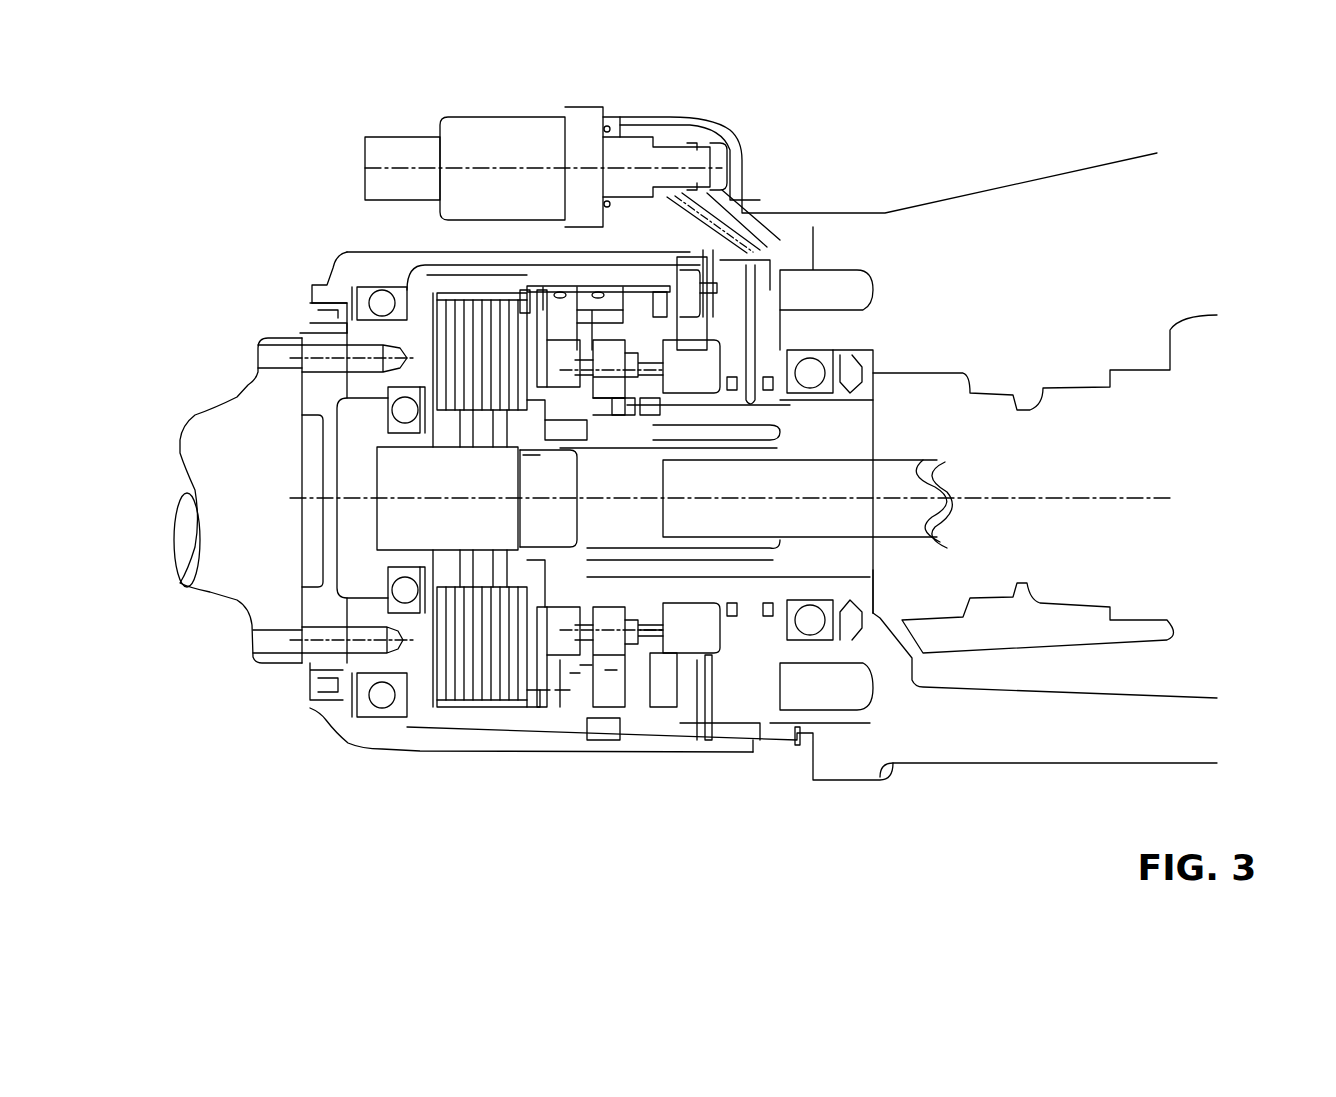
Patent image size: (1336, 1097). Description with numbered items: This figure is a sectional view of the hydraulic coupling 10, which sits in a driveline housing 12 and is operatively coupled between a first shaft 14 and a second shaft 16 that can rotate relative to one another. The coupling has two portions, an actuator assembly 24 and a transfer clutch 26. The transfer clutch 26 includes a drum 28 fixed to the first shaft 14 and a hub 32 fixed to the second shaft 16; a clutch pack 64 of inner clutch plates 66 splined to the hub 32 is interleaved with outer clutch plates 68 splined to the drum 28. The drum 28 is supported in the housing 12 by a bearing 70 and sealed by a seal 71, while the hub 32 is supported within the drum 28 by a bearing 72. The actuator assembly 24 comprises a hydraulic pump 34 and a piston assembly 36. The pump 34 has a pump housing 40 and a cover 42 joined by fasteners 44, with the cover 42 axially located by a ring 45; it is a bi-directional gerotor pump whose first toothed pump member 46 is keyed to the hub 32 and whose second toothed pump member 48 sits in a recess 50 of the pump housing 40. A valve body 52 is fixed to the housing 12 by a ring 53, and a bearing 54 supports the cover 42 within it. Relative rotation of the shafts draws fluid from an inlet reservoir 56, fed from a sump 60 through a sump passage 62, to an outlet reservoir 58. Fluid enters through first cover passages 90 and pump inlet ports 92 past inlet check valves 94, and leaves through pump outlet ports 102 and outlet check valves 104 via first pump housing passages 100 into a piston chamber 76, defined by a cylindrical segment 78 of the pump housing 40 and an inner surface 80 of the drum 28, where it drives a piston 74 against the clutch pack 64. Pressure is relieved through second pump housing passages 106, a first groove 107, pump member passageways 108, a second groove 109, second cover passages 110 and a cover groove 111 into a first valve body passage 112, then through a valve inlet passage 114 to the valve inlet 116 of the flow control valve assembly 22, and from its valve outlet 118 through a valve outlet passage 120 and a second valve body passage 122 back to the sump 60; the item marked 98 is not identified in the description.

The hydraulic coupling 10 is at (323, 793).
The housing 12 is at (355, 267).
The first shaft 14 is at (212, 567).
The second shaft 16 is at (923, 460).
The flow control valve assembly 22 is at (472, 123).
The actuator assembly 24 is at (585, 670).
The transfer clutch 26 is at (467, 710).
The drum 28 is at (313, 610).
The hub 32 is at (513, 560).
The hydraulic pump 34 is at (585, 287).
The piston assembly 36 is at (537, 287).
The pump housing 40 is at (605, 725).
The cover 42 is at (643, 697).
The fasteners 44 is at (613, 313).
The ring 45 is at (650, 707).
The first toothed pump member 46 is at (620, 550).
The second toothed pump member 48 is at (596, 660).
The recess 50 is at (610, 673).
The valve body 52 is at (697, 727).
The ring 53 is at (797, 733).
The bearing 54 is at (830, 358).
The inlet reservoir 56 is at (683, 386).
The outlet reservoir 58 is at (580, 357).
The sump 60 is at (625, 312).
The sump passage 62 is at (677, 723).
The clutch pack 64 is at (410, 710).
The inner clutch plates 66 is at (437, 610).
The outer clutch plates 68 is at (437, 677).
The bearing 70 is at (367, 715).
The seal 71 is at (327, 693).
The bearing 72 is at (387, 573).
The piston 74 is at (530, 710).
The piston chamber 76 is at (560, 660).
The cylindrical segment 78 is at (513, 560).
The inner surface 80 is at (562, 650).
The first cover passages 90 is at (650, 633).
The pump inlet ports 92 is at (630, 607).
The inlet check valves 94 is at (650, 627).
The carrier 98 is at (640, 353).
The first pump housing passages 100 is at (553, 527).
The pump outlet ports 102 is at (578, 673).
The outlet check valves 104 is at (547, 673).
The second pump housing passages 106 is at (557, 367).
The first groove 107 is at (562, 428).
The pump member passageways 108 is at (620, 417).
The second groove 109 is at (633, 407).
The second cover passages 110 is at (653, 407).
The cover groove 111 is at (850, 397).
The first valve body passage 112 is at (757, 290).
The valve inlet passage 114 is at (727, 210).
The valve inlet 116 is at (713, 155).
The valve outlet 118 is at (670, 197).
The valve outlet passage 120 is at (687, 223).
The second valve body passage 122 is at (720, 297).